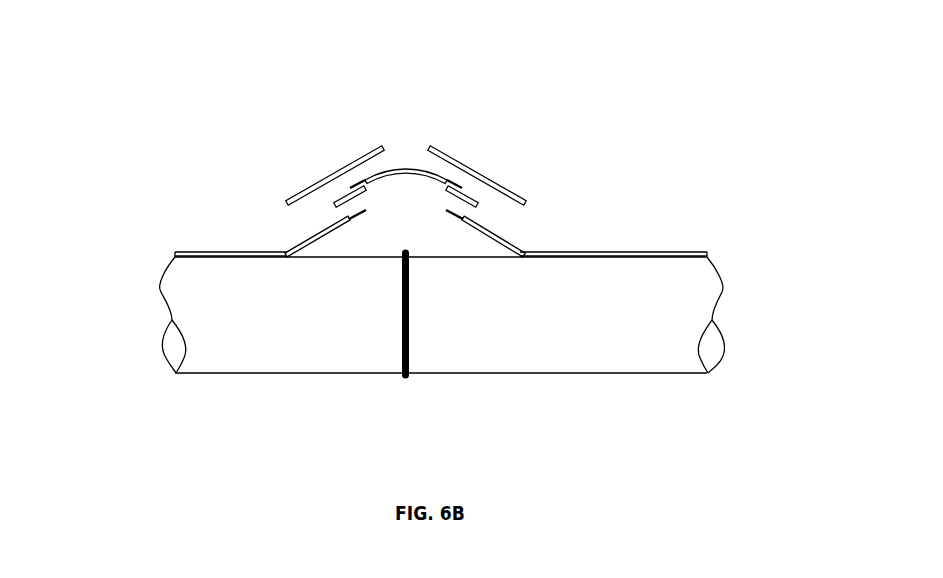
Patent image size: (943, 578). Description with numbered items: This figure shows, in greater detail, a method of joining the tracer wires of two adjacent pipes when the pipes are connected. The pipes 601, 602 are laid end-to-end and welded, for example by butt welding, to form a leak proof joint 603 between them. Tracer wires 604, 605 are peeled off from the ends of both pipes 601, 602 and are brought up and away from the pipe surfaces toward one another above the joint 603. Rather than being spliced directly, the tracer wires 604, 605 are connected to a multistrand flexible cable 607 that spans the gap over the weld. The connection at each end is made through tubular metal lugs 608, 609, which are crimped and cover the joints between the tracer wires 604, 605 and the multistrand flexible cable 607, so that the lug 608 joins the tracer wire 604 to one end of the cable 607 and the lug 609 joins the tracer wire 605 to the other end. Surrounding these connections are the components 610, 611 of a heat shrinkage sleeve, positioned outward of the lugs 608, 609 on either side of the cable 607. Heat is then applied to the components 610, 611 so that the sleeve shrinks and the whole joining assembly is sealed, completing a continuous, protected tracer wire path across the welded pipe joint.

The pipe 601 is at (159, 292).
The pipe 602 is at (723, 299).
The leak proof joint 603 is at (408, 352).
The tracer wire 604 is at (313, 240).
The tracer wire 605 is at (505, 240).
The multistrand flexible cable 607 is at (398, 167).
The tubular metal lug 608 is at (348, 193).
The tubular metal lug 609 is at (473, 198).
The component of heat shrinkage sleeve 610 is at (343, 168).
The component of heat shrinkage sleeve 611 is at (468, 167).